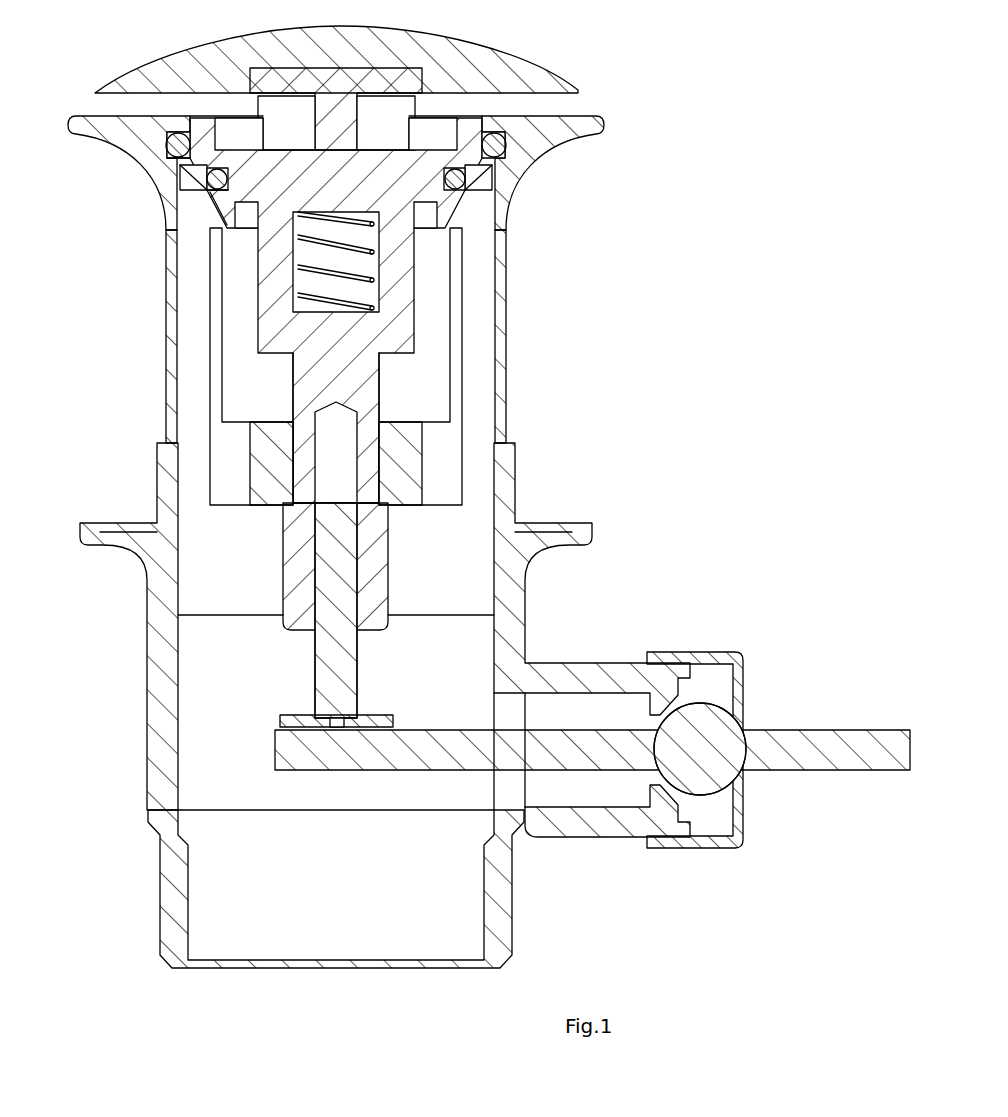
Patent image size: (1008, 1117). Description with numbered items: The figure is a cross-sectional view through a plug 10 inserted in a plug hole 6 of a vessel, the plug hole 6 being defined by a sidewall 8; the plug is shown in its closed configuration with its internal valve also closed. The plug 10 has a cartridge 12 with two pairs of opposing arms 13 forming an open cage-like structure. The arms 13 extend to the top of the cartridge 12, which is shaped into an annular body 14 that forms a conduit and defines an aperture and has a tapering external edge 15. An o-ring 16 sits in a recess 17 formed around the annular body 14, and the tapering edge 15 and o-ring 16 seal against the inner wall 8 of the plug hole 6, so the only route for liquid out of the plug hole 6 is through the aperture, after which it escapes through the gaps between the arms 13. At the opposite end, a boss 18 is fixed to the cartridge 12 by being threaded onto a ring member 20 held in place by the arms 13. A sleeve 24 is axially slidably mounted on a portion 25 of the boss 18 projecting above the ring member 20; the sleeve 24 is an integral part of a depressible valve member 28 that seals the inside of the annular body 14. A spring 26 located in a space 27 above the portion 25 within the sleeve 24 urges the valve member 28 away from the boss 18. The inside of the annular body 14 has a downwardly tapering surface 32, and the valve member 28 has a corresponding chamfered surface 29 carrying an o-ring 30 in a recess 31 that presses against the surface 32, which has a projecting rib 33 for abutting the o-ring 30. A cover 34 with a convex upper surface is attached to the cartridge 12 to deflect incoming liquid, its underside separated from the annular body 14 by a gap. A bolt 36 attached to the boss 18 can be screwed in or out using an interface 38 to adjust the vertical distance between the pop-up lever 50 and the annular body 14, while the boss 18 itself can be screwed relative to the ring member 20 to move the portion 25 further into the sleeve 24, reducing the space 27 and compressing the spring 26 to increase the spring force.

The plug hole 6 is at (520, 123).
The sidewall 8 is at (512, 177).
The plug 10 is at (538, 52).
The cartridge 12 is at (455, 317).
The arms 13 is at (215, 398).
The annular body 14 is at (167, 130).
The tapering external edge 15 is at (176, 144).
The o-ring 16 is at (173, 152).
The recess 17 is at (196, 176).
The boss 18 is at (370, 555).
The ring member 20 is at (400, 480).
The sleeve 24 is at (390, 267).
The portion 25 is at (362, 357).
The spring 26 is at (317, 277).
The space 27 is at (323, 250).
The valve member 28 is at (410, 180).
The chamfered surface 29 is at (262, 150).
The o-ring 30 is at (208, 192).
The recess 31 is at (216, 195).
The downwardly tapering surface 32 is at (202, 188).
The projecting rib 33 is at (457, 167).
The cover 34 is at (177, 72).
The bolt 36 is at (344, 663).
The interface 38 is at (318, 720).
The pop-up lever 50 is at (363, 772).